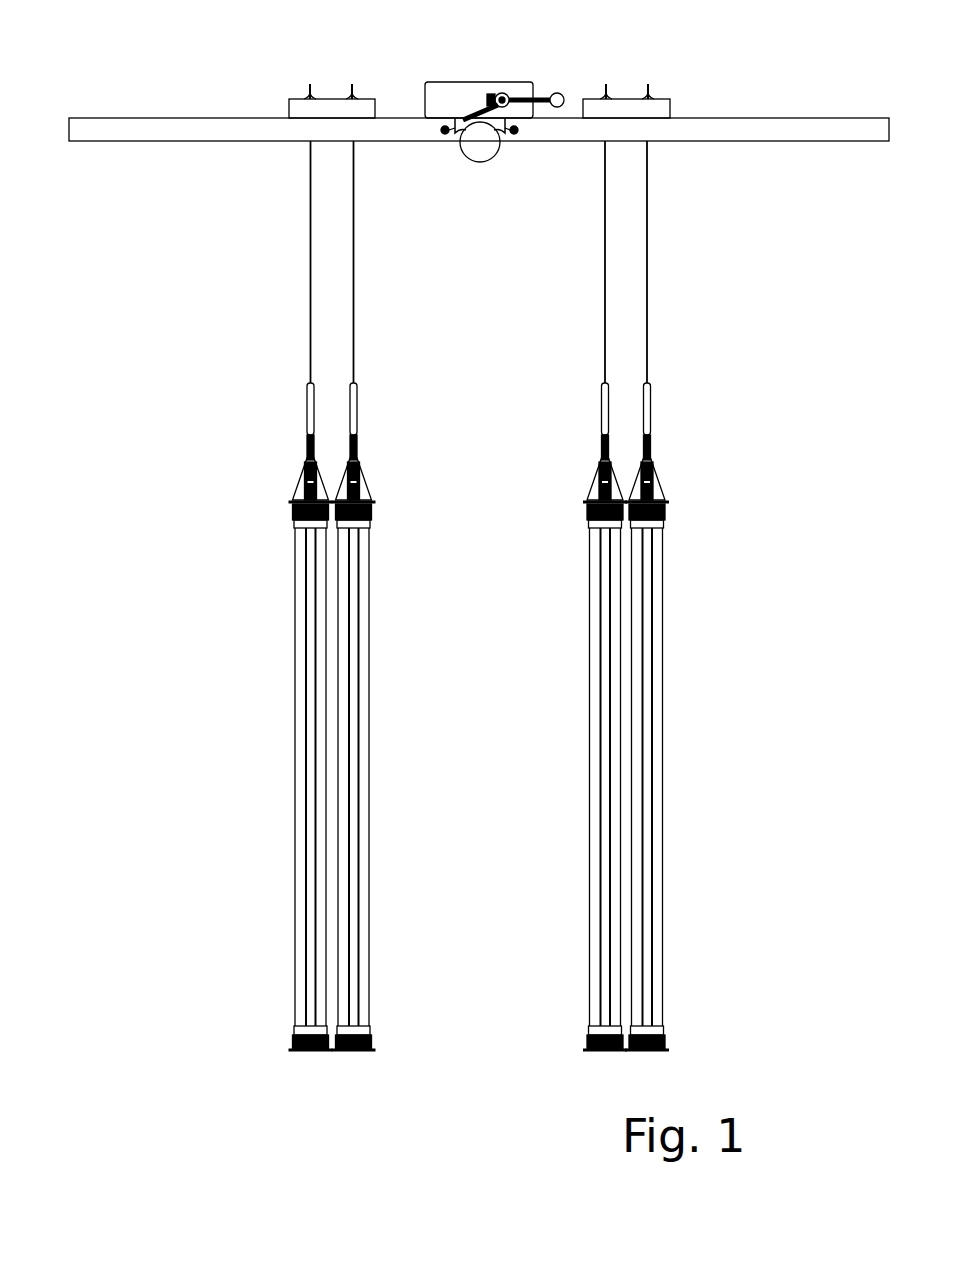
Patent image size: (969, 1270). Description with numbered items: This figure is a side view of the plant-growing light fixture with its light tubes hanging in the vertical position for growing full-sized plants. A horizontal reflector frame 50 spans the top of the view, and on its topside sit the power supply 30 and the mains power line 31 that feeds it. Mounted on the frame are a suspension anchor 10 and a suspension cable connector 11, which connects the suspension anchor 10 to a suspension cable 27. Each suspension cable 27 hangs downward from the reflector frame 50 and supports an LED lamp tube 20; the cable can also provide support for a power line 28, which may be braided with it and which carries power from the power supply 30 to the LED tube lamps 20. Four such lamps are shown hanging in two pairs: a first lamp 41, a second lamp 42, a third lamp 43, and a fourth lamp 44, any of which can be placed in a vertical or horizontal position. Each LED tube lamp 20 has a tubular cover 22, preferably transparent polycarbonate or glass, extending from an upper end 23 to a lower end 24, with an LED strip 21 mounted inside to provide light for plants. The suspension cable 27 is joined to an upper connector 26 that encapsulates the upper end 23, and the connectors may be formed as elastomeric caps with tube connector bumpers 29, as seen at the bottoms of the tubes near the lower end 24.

The suspension anchor 10 is at (675, 102).
The suspension cable connector 11 is at (310, 85).
The LED lamp tube 20 is at (548, 619).
The LED strip 21 is at (643, 622).
The tubular cover 22 is at (691, 777).
The upper end 23 is at (672, 528).
The lower end 24 is at (670, 1043).
The upper connector 26 is at (673, 508).
The suspension cable 27 is at (658, 460).
The power line 28 is at (651, 215).
The tube connector bumpers 29 is at (585, 1040).
The power supply 30 is at (511, 101).
The mains power line 31 is at (540, 92).
The first lamp 41 is at (650, 619).
The second lamp 42 is at (580, 850).
The third lamp 43 is at (375, 765).
The fourth lamp 44 is at (295, 663).
The reflector frame 50 is at (95, 143).